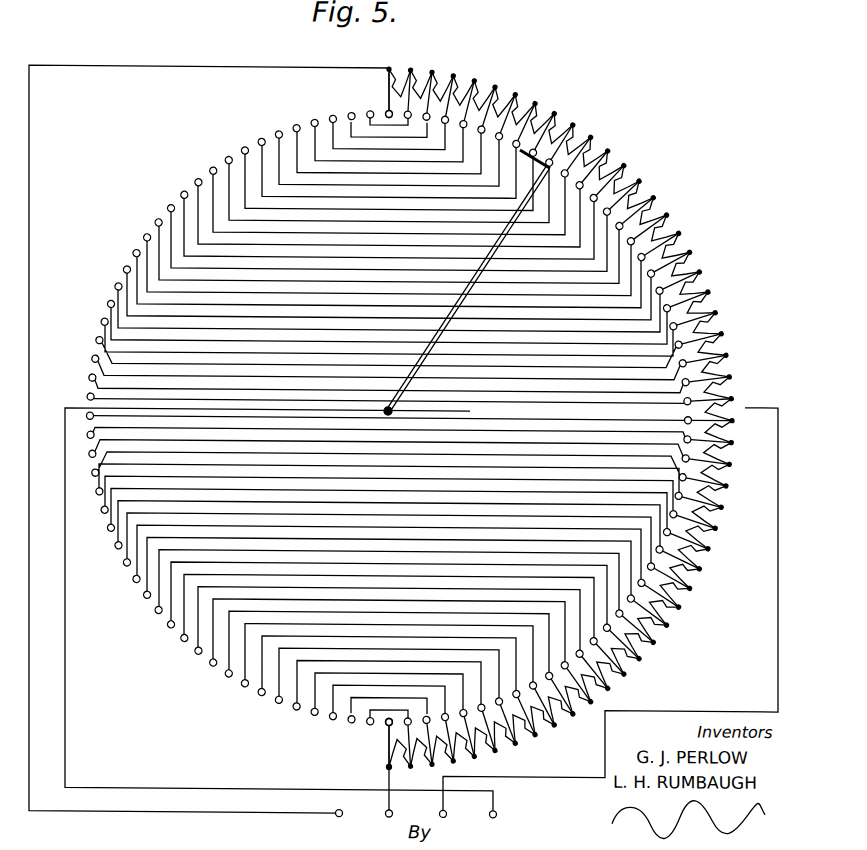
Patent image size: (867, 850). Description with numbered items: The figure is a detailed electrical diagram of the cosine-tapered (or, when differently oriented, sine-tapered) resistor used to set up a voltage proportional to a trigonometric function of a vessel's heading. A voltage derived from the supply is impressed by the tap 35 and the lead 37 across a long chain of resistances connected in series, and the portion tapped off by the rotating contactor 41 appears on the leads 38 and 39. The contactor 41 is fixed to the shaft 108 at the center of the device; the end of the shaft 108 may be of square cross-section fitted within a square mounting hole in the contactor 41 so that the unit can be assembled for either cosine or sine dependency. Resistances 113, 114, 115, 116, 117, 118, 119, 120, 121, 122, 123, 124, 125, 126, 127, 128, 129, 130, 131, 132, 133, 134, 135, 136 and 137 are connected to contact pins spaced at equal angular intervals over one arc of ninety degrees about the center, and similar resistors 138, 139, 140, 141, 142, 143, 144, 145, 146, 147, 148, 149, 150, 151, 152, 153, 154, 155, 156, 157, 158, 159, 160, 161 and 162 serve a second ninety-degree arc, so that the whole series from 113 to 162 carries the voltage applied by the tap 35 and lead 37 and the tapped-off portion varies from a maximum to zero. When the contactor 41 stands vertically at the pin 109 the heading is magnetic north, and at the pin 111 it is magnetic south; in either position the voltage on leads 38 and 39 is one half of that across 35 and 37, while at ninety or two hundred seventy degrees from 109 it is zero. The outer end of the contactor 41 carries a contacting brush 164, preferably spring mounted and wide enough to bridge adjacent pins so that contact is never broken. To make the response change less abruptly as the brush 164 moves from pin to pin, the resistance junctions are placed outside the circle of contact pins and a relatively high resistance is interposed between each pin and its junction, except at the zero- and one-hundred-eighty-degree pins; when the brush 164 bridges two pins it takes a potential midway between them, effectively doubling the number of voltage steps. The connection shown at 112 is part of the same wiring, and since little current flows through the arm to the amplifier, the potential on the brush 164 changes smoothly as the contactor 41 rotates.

The tap 35 is at (386, 767).
The lead 37 is at (221, 815).
The lead 38 is at (270, 788).
The lead 39 is at (778, 688).
The rotating contactor 41 is at (408, 385).
The shaft 108 is at (392, 411).
The contact pin 109 is at (386, 110).
The contact pin 111 is at (386, 726).
The center tap lead 112 is at (682, 417).
The resistance 113 is at (400, 62).
The resistance 114 is at (417, 70).
The resistance 115 is at (443, 65).
The resistance 116 is at (460, 76).
The resistance 117 is at (482, 82).
The resistance 118 is at (504, 89).
The resistance 119 is at (525, 97).
The resistance 120 is at (548, 107).
The resistance 121 is at (566, 118).
The resistance 122 is at (591, 131).
The resistance 123 is at (608, 146).
The resistance 124 is at (625, 160).
The resistance 125 is at (639, 176).
The resistance 126 is at (653, 192).
The resistance 127 is at (666, 207).
The resistance 128 is at (681, 226).
The resistance 129 is at (693, 245).
The resistance 130 is at (704, 265).
The resistance 131 is at (713, 284).
The resistance 132 is at (721, 303).
The resistance 133 is at (727, 326).
The resistance 134 is at (731, 344).
The resistance 135 is at (736, 363).
The resistance 136 is at (738, 383).
The resistance 137 is at (738, 402).
The resistor 138 is at (738, 431).
The resistor 139 is at (735, 453).
The resistor 140 is at (734, 474).
The resistor 141 is at (730, 494).
The resistor 142 is at (726, 514).
The resistor 143 is at (722, 535).
The resistor 144 is at (716, 554).
The resistor 145 is at (707, 573).
The resistor 146 is at (697, 591).
The resistor 147 is at (687, 611).
The resistor 148 is at (675, 629).
The resistor 149 is at (658, 647).
The resistor 150 is at (643, 663).
The resistor 151 is at (629, 676).
The resistor 152 is at (608, 690).
The resistor 153 is at (580, 703).
The resistor 154 is at (562, 719).
The resistor 155 is at (550, 733).
The resistor 156 is at (524, 739).
The resistor 157 is at (501, 746).
The resistor 158 is at (495, 761).
The resistor 159 is at (463, 770).
The resistor 160 is at (432, 772).
The resistor 161 is at (418, 762).
The resistor 162 is at (382, 774).
The contacting brush 164 is at (549, 161).